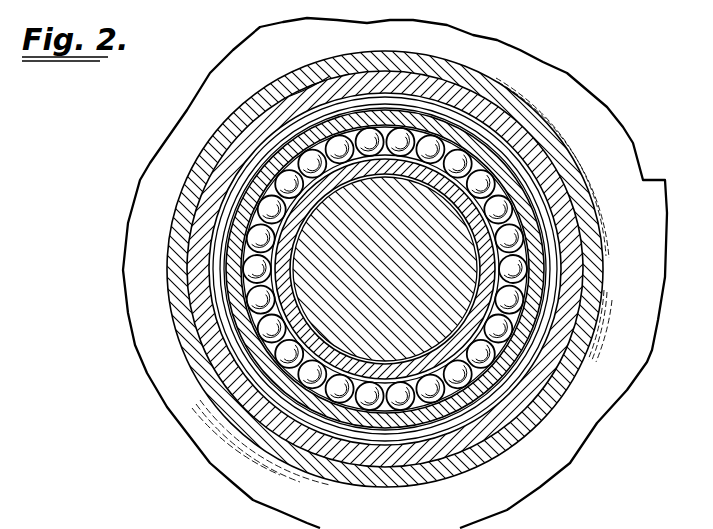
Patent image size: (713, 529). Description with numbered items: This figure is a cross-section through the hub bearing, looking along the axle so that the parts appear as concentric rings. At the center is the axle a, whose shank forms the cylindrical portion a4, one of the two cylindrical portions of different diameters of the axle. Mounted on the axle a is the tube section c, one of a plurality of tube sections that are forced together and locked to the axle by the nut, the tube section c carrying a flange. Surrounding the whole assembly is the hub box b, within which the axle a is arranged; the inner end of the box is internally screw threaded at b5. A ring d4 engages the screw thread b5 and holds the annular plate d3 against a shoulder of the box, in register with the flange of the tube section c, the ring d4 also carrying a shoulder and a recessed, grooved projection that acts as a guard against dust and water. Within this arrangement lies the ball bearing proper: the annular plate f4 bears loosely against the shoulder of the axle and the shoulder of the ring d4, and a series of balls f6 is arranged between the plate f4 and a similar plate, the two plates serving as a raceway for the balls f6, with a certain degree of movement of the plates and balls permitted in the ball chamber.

The hub box b is at (395, 273).
The internal screw thread b5 is at (308, 88).
The ring d4 is at (547, 165).
The annular plate d3 is at (522, 374).
The annular plate f4 is at (295, 167).
The balls f6 is at (400, 137).
The tube section c is at (496, 278).
The axle a is at (297, 243).
The cylindrical portion a4 is at (291, 275).